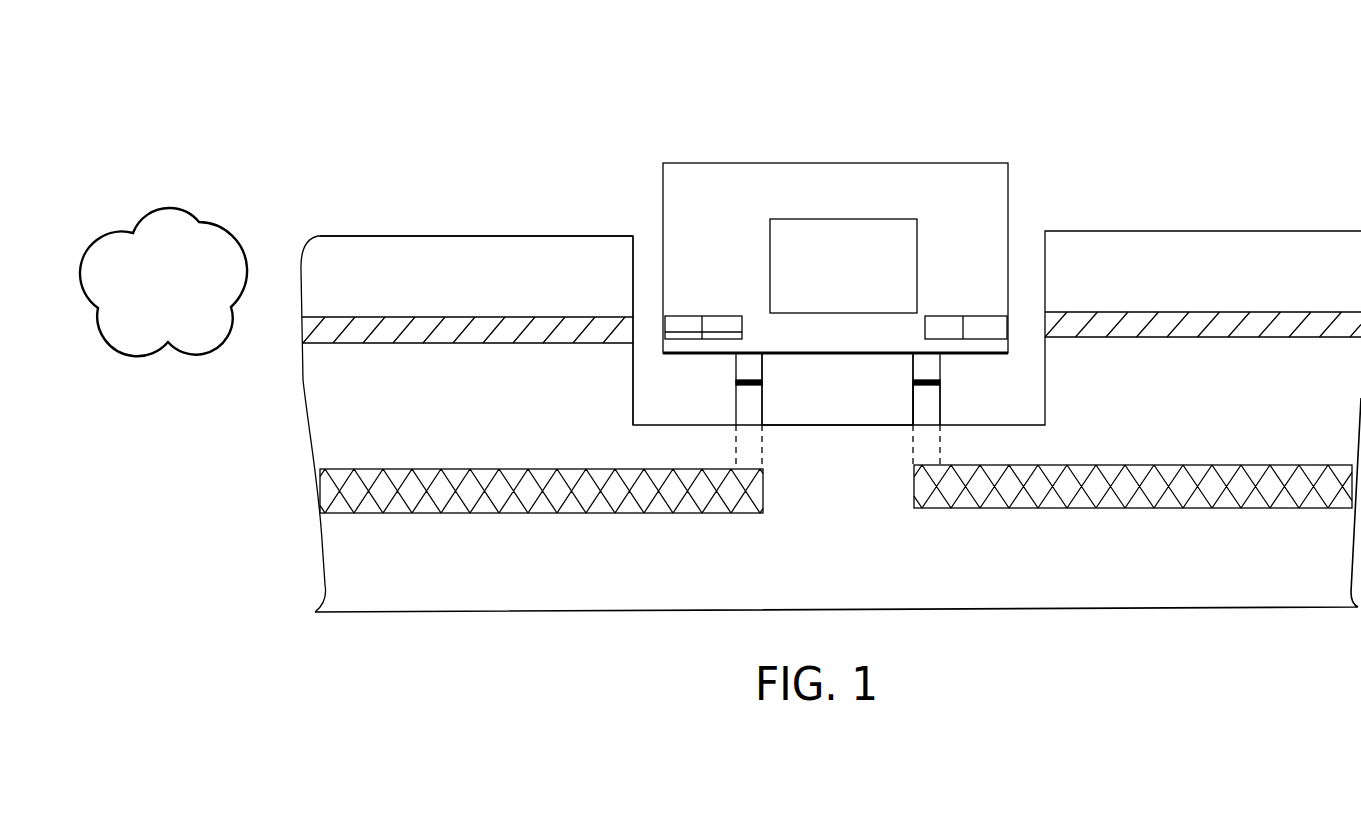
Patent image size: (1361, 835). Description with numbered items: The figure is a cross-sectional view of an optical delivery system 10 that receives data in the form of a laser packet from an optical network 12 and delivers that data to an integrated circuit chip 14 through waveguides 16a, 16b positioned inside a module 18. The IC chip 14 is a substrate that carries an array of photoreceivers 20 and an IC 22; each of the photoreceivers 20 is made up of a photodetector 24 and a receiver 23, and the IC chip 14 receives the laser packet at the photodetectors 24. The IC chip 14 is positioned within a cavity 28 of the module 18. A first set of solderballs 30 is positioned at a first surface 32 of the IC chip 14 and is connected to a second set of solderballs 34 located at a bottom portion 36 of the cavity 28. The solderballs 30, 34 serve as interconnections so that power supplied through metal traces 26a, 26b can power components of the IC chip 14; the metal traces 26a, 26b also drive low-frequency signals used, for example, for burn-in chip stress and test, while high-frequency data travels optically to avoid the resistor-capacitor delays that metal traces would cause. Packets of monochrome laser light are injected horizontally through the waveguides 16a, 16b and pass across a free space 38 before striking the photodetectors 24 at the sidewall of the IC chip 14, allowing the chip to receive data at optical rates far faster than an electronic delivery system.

The optical delivery system 10 is at (733, 45).
The optical network 12 is at (195, 222).
The integrated circuit (IC) chip 14 is at (880, 162).
The waveguide 16a is at (425, 318).
The waveguide 16b is at (1190, 313).
The module 18 is at (470, 237).
The photoreceivers 20 is at (678, 316).
The IC 22 is at (837, 219).
The receivers 23 is at (728, 332).
The photodetectors 24 is at (692, 332).
The metal trace 26a is at (462, 513).
The metal trace 26b is at (1082, 508).
The cavity 28 is at (888, 386).
The first set of solderballs 30 is at (933, 363).
The first surface 32 is at (853, 342).
The second set of solderballs 34 is at (935, 402).
The bottom portion 36 is at (842, 426).
The free space 38 is at (628, 228).